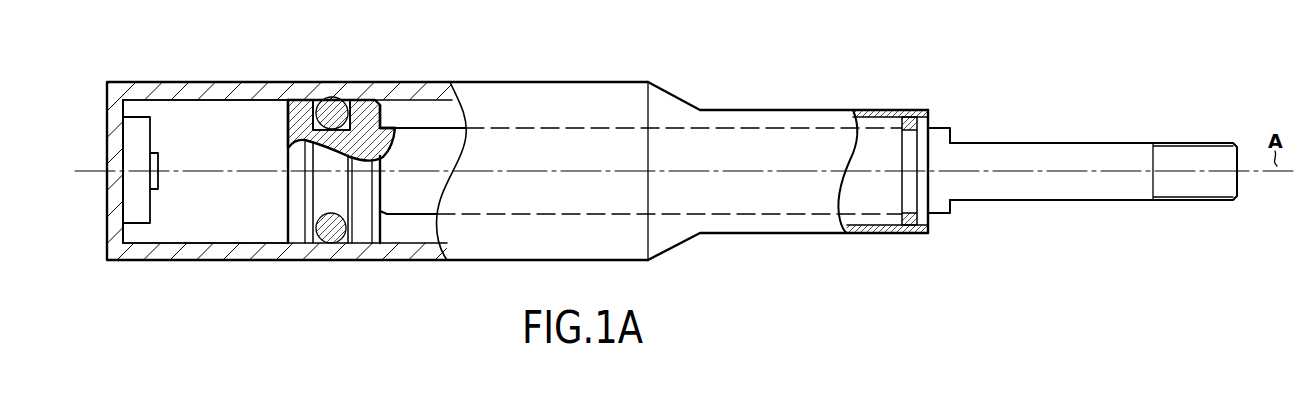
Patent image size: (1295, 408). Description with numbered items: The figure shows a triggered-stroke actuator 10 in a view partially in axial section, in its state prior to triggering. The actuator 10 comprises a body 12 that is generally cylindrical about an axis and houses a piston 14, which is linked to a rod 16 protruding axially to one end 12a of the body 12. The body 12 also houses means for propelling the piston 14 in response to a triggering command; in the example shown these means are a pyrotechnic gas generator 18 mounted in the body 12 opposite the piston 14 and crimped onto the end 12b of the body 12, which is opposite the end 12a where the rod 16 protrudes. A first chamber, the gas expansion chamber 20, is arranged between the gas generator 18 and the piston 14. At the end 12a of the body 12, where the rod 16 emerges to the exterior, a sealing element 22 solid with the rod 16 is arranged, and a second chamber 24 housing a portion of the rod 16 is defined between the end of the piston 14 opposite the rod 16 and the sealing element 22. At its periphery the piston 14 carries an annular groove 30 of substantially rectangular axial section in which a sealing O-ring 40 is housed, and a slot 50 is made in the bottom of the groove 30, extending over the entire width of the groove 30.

The triggered-stroke actuator 10 is at (508, 62).
The body 12 is at (211, 87).
The end of the body 12a is at (925, 99).
The end of the body 12b is at (112, 75).
The piston 14 is at (288, 128).
The rod 16 is at (1055, 152).
The pyrotechnic gas generator 18 is at (135, 143).
The gas expansion chamber 20 is at (203, 230).
The sealing element 22 is at (906, 227).
The second chamber 24 is at (422, 110).
The annular groove 30 is at (311, 100).
The sealing O-ring 40 is at (333, 110).
The slot 50 is at (362, 120).